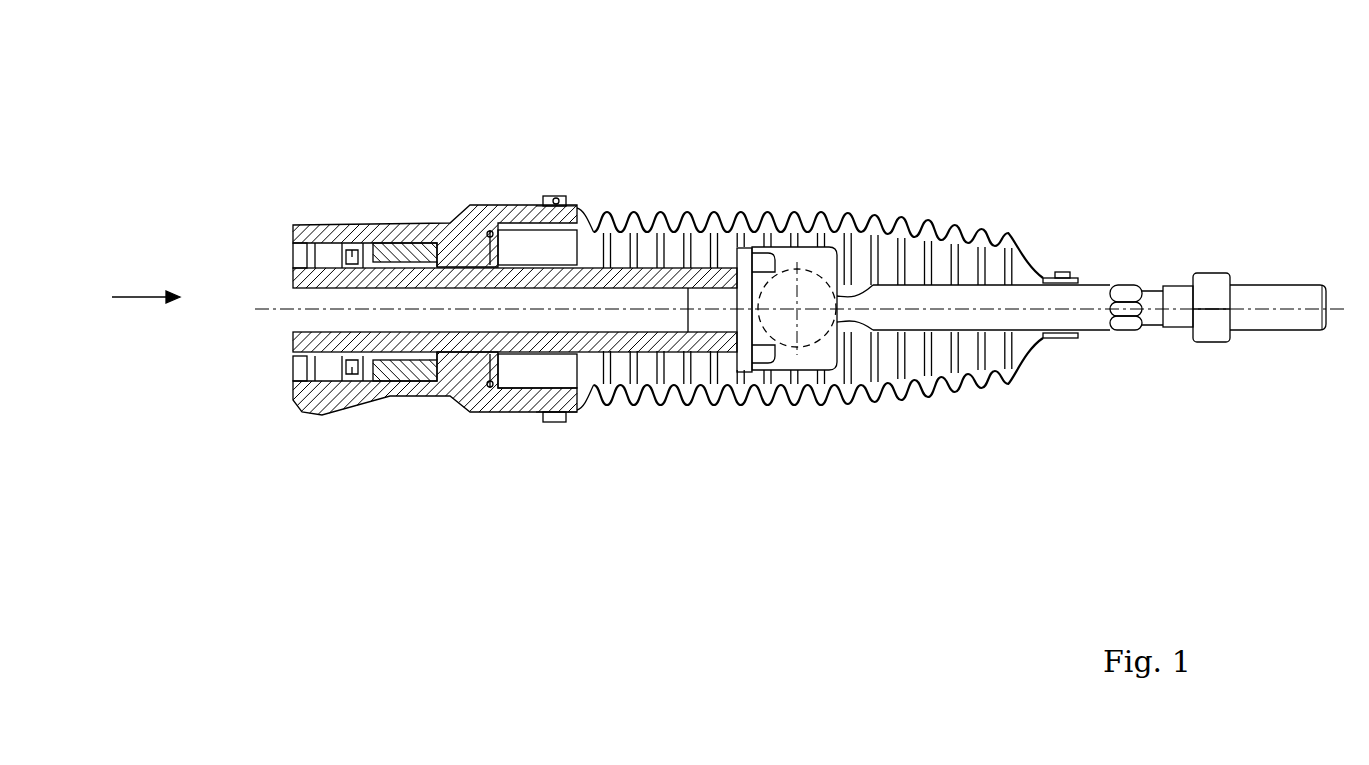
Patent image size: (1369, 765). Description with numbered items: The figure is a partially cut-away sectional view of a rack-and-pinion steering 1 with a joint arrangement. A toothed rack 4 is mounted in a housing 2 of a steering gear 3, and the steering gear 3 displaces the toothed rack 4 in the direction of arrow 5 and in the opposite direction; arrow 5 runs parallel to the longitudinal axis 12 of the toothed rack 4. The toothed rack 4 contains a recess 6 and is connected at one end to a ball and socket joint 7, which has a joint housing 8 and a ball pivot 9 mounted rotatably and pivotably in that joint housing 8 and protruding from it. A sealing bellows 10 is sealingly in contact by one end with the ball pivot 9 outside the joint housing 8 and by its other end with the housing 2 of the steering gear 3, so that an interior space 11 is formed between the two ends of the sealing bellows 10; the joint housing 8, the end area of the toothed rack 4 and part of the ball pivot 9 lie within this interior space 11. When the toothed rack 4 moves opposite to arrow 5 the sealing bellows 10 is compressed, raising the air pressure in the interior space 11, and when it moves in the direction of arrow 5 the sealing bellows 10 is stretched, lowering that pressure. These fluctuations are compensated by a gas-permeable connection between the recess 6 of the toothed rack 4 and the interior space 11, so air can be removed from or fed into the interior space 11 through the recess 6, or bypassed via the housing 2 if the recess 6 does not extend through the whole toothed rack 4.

The rack-and-pinion steering 1 is at (215, 142).
The housing 2 is at (318, 417).
The steering gear 3 is at (280, 381).
The toothed rack 4 is at (300, 281).
The arrow 5 is at (143, 297).
The recess 6 is at (313, 323).
The ball and socket joint 7 is at (821, 243).
The joint housing 8 is at (810, 365).
The ball pivot 9 is at (1000, 322).
The sealing bellows 10 is at (938, 223).
The interior space 11 is at (703, 377).
The longitudinal axis 12 is at (425, 318).